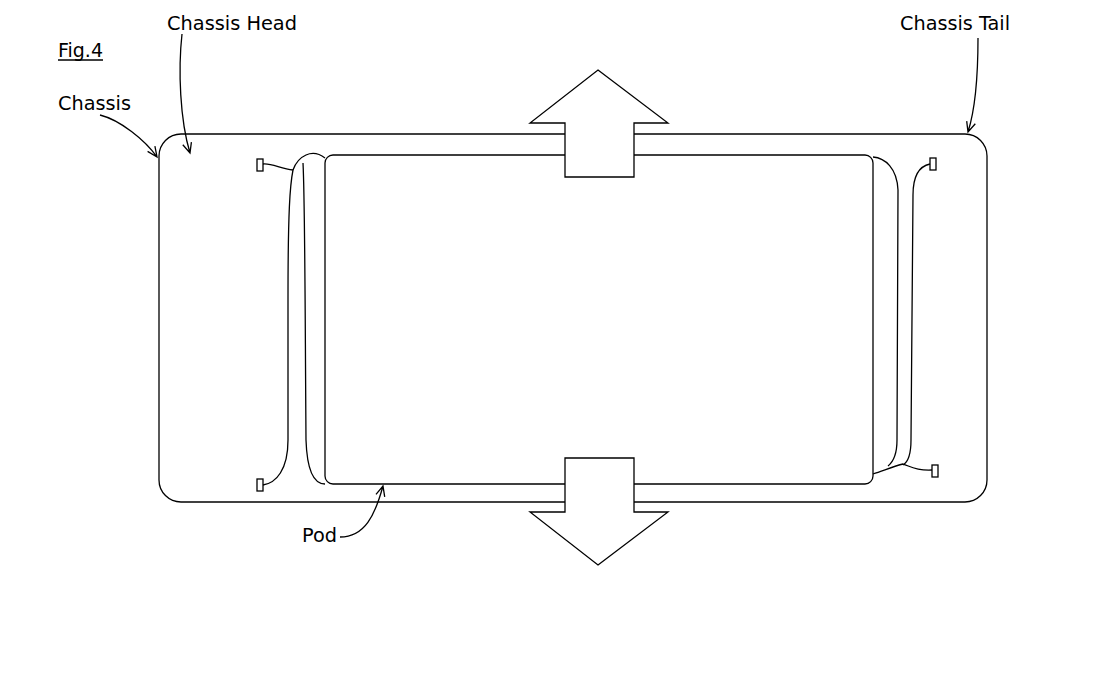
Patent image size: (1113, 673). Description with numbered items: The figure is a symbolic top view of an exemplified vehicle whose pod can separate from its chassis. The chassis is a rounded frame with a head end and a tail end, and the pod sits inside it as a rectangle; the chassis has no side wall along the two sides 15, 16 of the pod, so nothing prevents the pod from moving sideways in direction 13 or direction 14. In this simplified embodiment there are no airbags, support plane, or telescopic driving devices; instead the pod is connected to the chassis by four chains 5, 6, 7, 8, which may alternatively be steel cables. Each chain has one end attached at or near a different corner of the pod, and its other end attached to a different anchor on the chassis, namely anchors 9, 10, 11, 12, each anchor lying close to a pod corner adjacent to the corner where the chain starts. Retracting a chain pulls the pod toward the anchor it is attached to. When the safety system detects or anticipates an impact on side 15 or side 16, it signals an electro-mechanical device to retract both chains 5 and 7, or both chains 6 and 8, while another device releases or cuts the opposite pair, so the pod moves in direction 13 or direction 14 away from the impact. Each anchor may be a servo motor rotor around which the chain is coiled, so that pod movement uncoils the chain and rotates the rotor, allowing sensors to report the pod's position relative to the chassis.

The chain 5 is at (880, 486).
The chain 6 is at (911, 487).
The chain 7 is at (280, 149).
The chain 8 is at (319, 143).
The anchor 9 is at (950, 159).
The anchor 10 is at (952, 467).
The anchor 11 is at (241, 167).
The anchor 12 is at (242, 480).
The direction 13 is at (599, 107).
The direction 14 is at (637, 516).
The side 15 is at (501, 511).
The side 16 is at (803, 125).